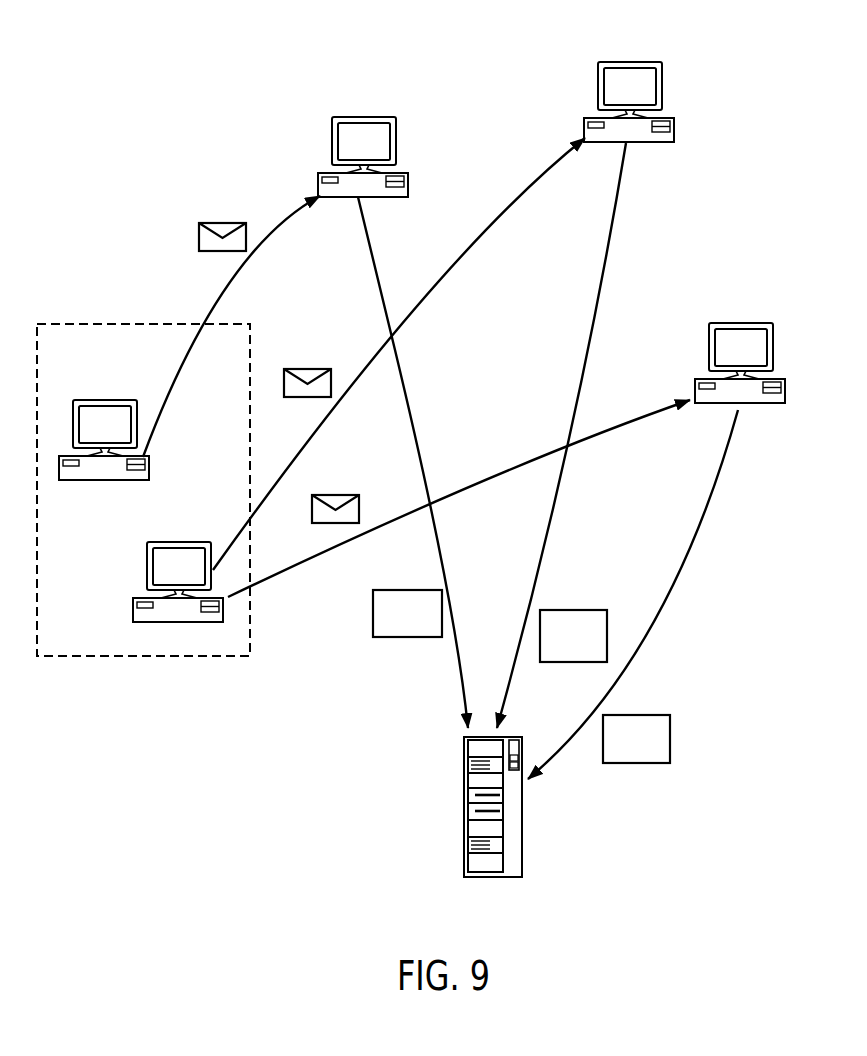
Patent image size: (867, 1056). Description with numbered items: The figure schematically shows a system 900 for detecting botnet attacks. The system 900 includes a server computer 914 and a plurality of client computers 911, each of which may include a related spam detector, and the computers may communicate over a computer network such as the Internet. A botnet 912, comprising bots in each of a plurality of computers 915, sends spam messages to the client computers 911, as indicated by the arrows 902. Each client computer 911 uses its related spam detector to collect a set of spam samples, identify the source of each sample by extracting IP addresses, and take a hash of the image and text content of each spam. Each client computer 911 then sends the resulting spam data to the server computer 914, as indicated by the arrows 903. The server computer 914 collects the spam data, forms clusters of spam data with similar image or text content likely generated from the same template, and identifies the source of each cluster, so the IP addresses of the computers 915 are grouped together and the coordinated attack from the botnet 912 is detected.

The system 900 is at (136, 98).
The arrows 902 is at (226, 298).
The arrows 903 is at (366, 237).
The client computers 911 is at (365, 118).
The botnet 912 is at (79, 657).
The server computer 914 is at (523, 850).
The computers 915 is at (150, 468).